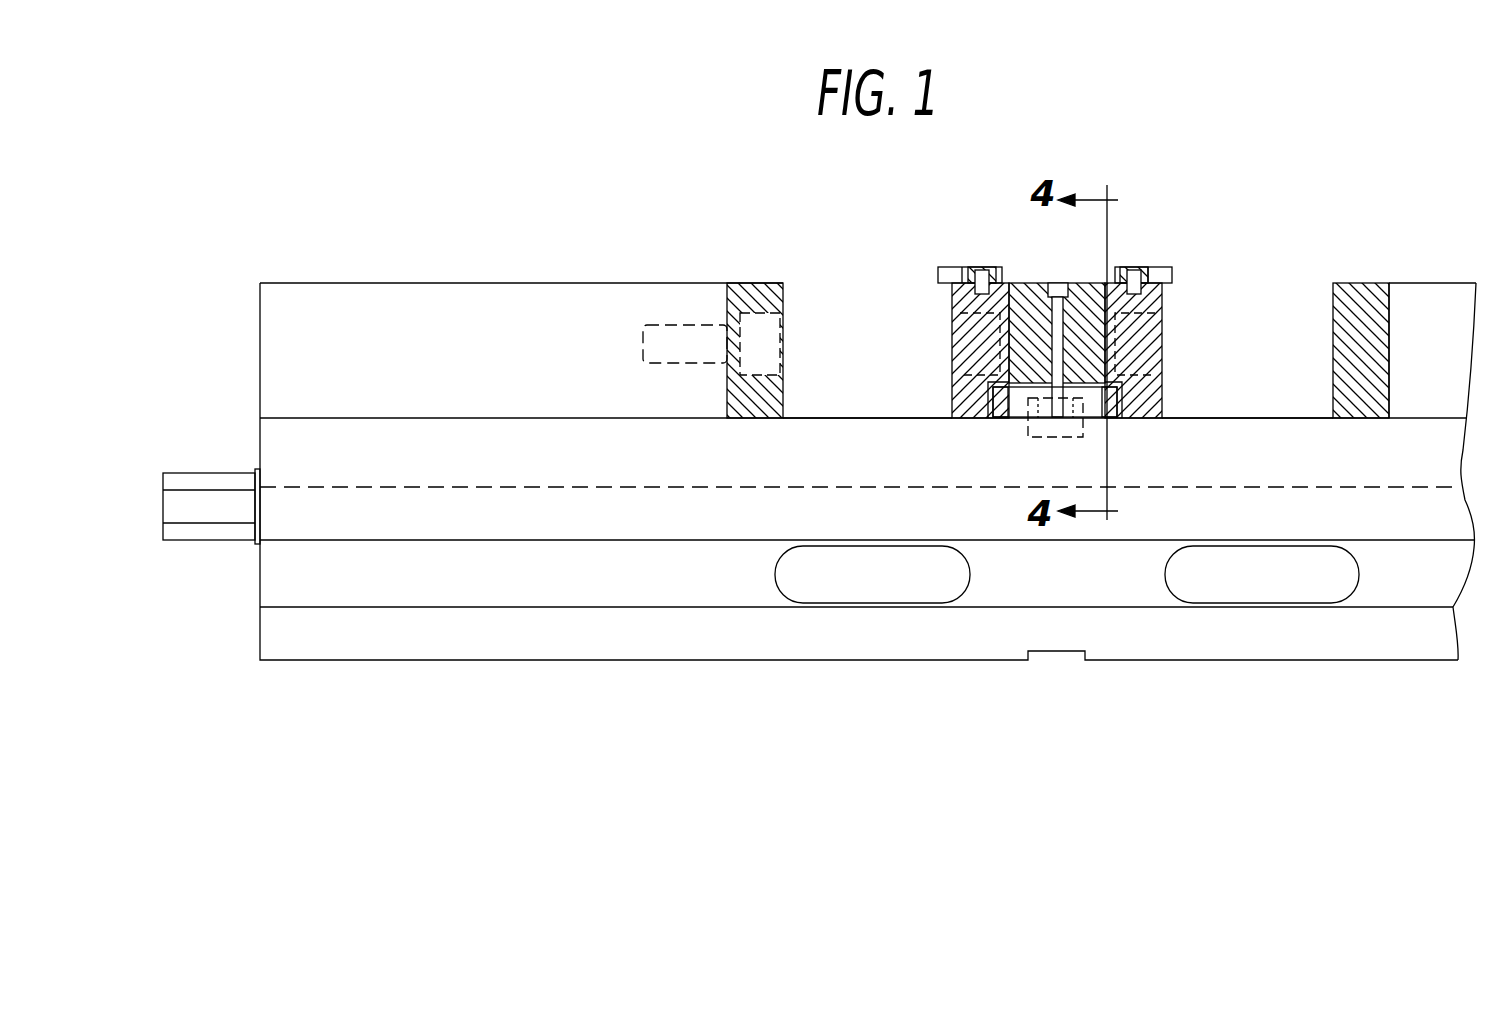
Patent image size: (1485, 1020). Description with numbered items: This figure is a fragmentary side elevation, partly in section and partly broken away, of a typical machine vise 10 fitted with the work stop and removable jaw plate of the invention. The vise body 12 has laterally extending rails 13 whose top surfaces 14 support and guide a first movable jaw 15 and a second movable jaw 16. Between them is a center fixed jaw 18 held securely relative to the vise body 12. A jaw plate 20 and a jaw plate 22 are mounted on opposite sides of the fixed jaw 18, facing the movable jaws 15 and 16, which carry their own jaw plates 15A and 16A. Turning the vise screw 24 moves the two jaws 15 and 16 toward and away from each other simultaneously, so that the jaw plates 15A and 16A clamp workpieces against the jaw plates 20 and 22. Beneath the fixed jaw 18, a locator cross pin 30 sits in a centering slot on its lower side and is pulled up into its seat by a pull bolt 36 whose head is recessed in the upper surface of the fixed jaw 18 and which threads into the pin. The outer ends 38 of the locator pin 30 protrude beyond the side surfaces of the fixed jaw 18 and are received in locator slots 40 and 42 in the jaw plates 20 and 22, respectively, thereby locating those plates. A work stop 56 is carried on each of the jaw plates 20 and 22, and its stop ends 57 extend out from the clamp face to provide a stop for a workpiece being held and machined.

The machine vise 10 is at (868, 497).
The vise body 12 is at (1093, 590).
The rails 13 is at (826, 445).
The top surfaces 14 is at (1240, 418).
The first movable jaw 15 is at (1386, 308).
The jaw plate 15A is at (1360, 285).
The second movable jaw 16 is at (521, 318).
The jaw plate 16A is at (760, 285).
The center fixed jaw 18 is at (1041, 315).
The jaw plate 20 is at (1160, 345).
The jaw plate 22 is at (950, 375).
The vise screw 24 is at (215, 470).
The locator cross pin 30 is at (1020, 428).
The pull bolt 36 is at (1017, 290).
The outer ends 38 is at (998, 425).
The locator slot 40 is at (1117, 420).
The locator slot 42 is at (990, 418).
The work stop 56 is at (980, 270).
The stop ends 57 is at (938, 275).